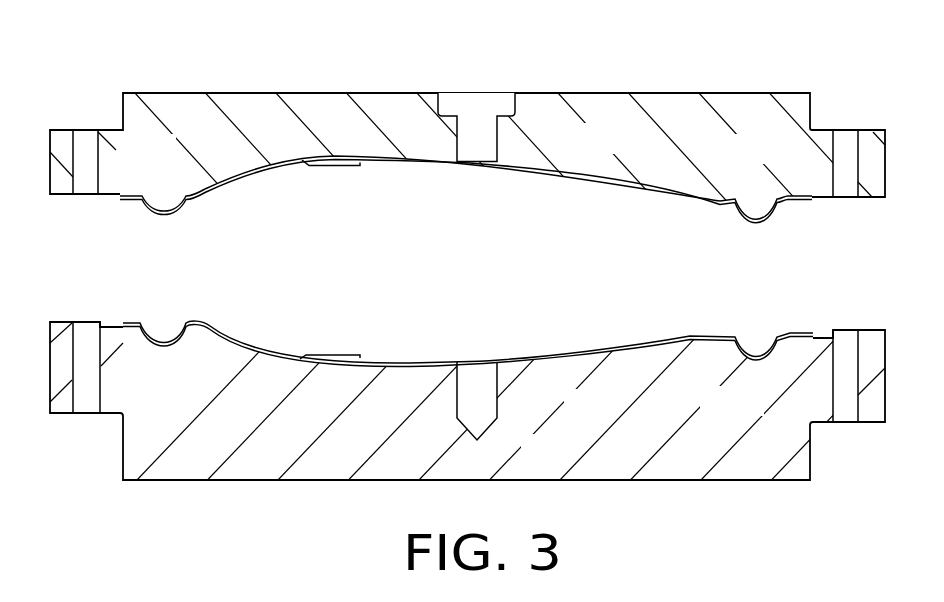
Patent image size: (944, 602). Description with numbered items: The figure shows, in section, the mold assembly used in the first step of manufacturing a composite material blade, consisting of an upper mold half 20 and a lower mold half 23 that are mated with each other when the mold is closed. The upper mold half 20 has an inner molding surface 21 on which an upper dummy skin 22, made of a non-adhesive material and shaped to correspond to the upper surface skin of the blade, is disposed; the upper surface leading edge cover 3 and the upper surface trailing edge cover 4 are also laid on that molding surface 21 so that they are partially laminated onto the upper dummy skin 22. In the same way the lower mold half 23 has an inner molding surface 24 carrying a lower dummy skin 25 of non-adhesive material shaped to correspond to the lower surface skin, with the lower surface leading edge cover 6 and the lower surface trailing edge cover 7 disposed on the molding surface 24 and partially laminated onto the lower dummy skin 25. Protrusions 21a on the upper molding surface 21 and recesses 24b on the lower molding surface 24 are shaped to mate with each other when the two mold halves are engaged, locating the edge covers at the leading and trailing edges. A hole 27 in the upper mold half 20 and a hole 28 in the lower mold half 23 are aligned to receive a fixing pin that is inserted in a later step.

The upper mold half 20 is at (717, 97).
The inner molding surface 21 is at (592, 180).
The protrusions 21a is at (168, 204).
The upper dummy skin 22 is at (420, 166).
The lower mold half 23 is at (741, 480).
The inner molding surface 24 is at (585, 353).
The recesses 24b is at (155, 340).
The lower dummy skin 25 is at (500, 353).
The hole 27 is at (473, 122).
The hole 28 is at (487, 407).
The upper surface leading edge cover 3 is at (225, 181).
The upper surface trailing edge cover 4 is at (695, 200).
The lower surface leading edge cover 6 is at (262, 352).
The lower surface trailing edge cover 7 is at (675, 333).